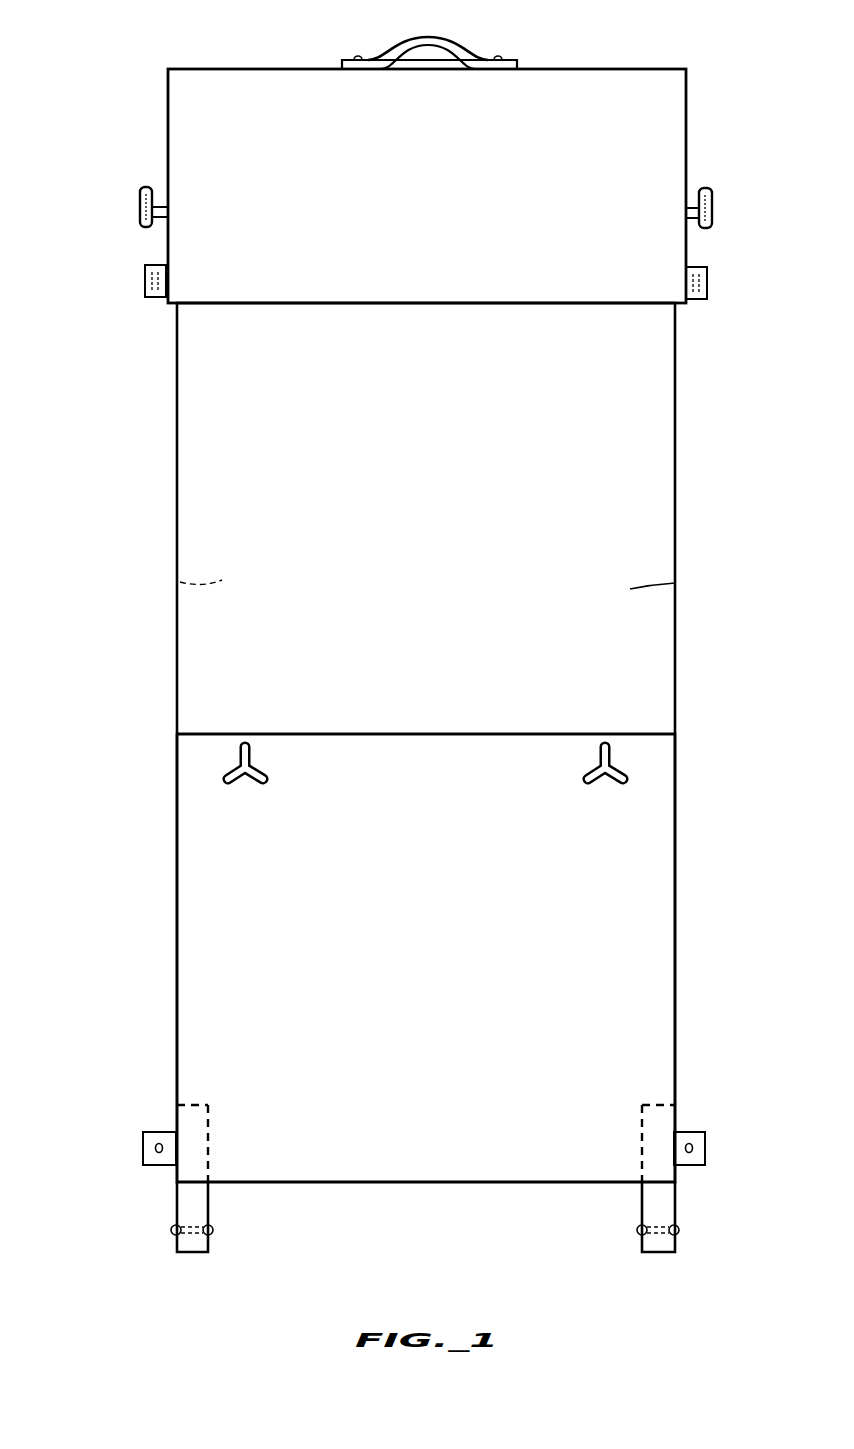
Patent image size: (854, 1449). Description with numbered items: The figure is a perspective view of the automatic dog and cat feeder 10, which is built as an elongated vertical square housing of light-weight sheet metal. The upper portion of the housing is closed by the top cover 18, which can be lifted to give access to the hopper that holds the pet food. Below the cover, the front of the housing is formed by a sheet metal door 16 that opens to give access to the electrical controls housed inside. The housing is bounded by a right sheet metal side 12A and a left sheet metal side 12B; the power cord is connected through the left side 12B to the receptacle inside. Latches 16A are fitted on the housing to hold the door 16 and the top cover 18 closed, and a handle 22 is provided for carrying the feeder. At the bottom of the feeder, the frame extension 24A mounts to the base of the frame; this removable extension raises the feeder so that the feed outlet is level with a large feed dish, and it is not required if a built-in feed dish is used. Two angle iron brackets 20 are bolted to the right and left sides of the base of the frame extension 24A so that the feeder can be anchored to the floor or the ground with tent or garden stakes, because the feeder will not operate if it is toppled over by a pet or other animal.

The automatic dog and cat feeder 10 is at (712, 444).
The right sheet metal side 12A is at (675, 586).
The left sheet metal side 12B is at (177, 582).
The sheet metal door 16 is at (660, 1005).
The latch 16A is at (145, 186).
The top cover 18 is at (668, 110).
The angle iron bracket 20 is at (158, 1132).
The handle 22 is at (428, 36).
The frame extension 24A is at (208, 1192).